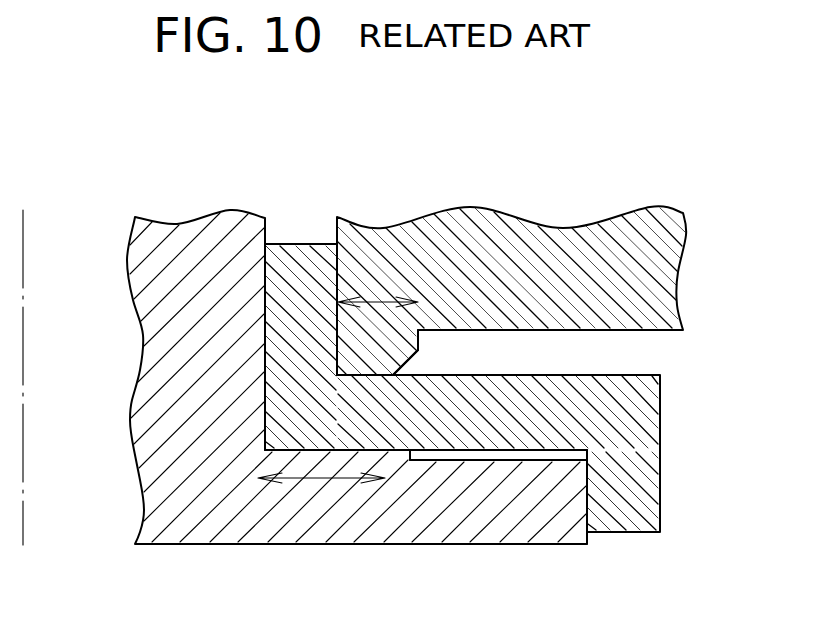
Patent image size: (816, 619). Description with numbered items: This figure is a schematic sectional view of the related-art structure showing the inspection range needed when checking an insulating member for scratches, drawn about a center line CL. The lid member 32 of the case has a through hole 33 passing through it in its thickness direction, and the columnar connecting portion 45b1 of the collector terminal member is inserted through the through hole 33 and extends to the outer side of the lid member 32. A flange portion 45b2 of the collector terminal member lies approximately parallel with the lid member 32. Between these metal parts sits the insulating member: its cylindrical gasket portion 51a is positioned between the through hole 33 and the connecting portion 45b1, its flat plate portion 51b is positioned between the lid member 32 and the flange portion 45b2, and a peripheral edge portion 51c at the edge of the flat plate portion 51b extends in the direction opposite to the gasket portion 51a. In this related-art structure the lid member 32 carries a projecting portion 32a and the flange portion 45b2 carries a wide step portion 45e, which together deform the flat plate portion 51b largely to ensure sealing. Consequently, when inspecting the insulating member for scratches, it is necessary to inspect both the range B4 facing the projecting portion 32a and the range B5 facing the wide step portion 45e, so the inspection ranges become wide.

The center line CL is at (23, 238).
The lid member 32 is at (622, 265).
The projecting portion 32a is at (390, 353).
The through hole 33 is at (333, 280).
The connecting portion 45b1 is at (190, 373).
The flange portion 45b2 is at (520, 505).
The step portion 45e is at (336, 450).
The gasket portion 51a is at (295, 325).
The flat plate portion 51b is at (543, 405).
The peripheral edge portion 51c is at (632, 493).
The range facing the projecting portion B4 is at (378, 302).
The range facing the step portion B5 is at (330, 483).